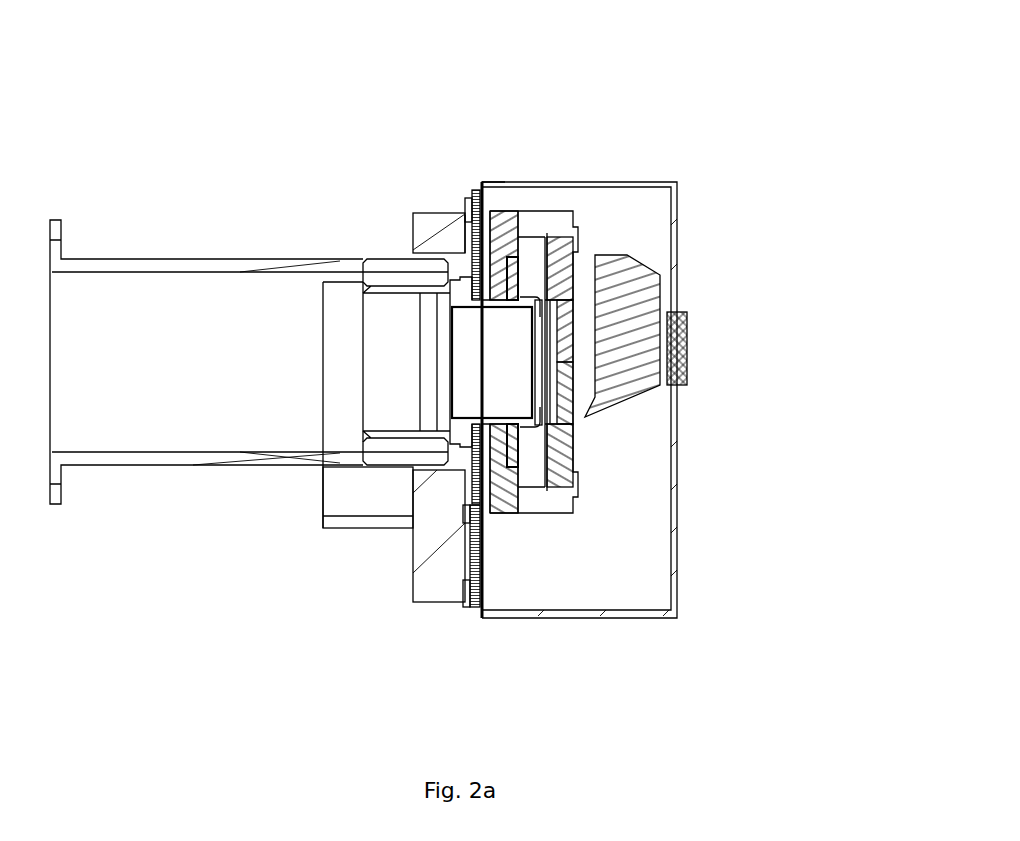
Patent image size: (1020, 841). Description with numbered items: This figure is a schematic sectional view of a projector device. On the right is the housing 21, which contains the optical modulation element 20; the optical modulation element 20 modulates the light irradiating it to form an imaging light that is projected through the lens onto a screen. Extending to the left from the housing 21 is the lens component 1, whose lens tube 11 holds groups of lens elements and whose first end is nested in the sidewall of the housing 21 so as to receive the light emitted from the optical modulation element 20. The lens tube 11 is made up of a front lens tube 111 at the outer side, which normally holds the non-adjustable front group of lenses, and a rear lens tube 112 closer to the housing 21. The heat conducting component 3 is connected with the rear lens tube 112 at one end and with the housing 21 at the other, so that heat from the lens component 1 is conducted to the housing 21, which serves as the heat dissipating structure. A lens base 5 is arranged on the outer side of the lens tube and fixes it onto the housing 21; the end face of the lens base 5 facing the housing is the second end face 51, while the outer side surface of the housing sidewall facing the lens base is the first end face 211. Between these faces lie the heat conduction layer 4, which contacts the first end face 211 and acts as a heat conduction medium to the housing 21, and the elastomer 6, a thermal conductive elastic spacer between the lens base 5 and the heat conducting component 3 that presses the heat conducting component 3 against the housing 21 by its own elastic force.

The lens component 1 is at (181, 292).
The lens tube 11 is at (368, 474).
The front lens tube 111 is at (270, 453).
The rear lens tube 112 is at (452, 455).
The lens base 5 is at (413, 218).
The second end face 51 is at (453, 235).
The heat conducting component 3 is at (493, 228).
The housing 21 is at (574, 310).
The first end face 211 is at (477, 178).
The optical modulation element 20 is at (686, 311).
The heat conduction layer 4 is at (483, 573).
The elastomer 6 is at (470, 607).